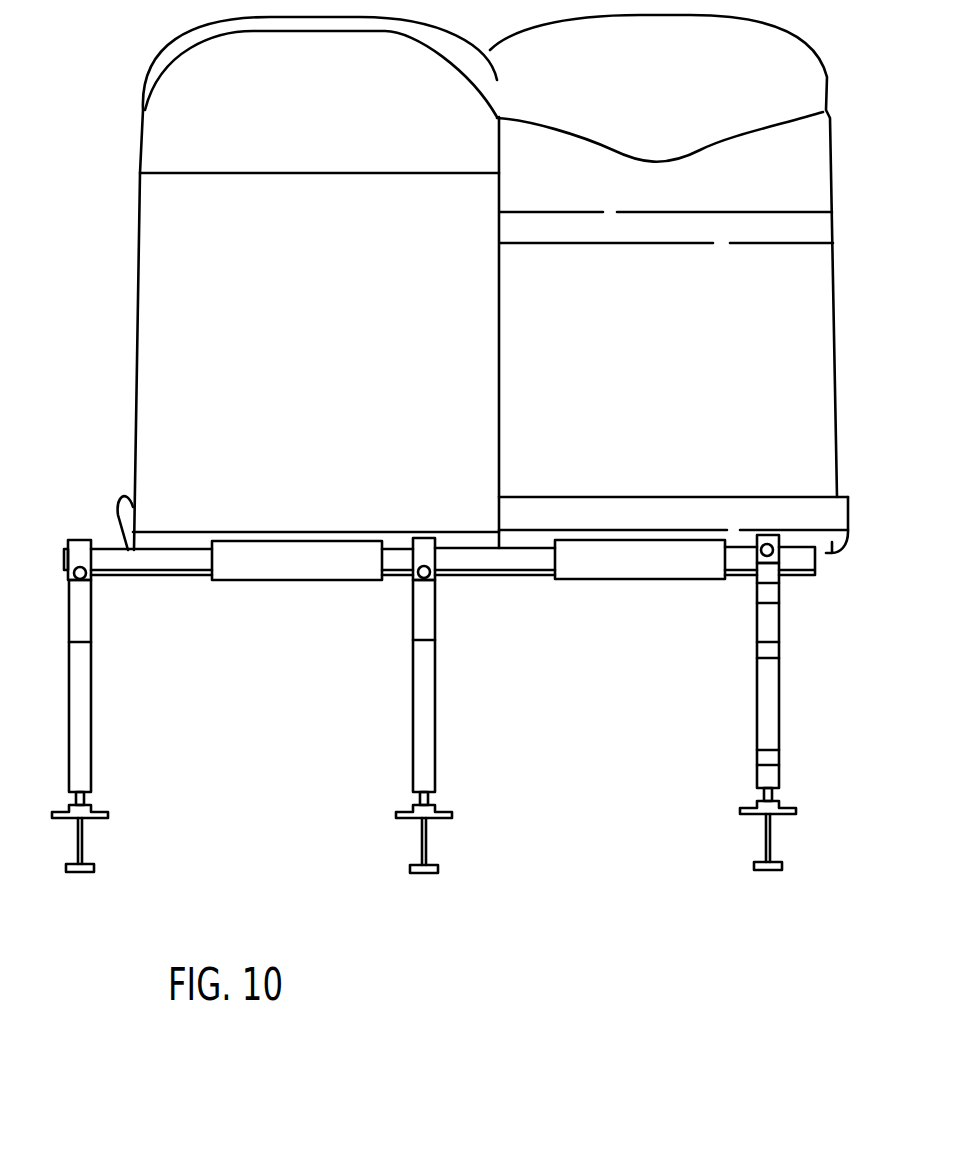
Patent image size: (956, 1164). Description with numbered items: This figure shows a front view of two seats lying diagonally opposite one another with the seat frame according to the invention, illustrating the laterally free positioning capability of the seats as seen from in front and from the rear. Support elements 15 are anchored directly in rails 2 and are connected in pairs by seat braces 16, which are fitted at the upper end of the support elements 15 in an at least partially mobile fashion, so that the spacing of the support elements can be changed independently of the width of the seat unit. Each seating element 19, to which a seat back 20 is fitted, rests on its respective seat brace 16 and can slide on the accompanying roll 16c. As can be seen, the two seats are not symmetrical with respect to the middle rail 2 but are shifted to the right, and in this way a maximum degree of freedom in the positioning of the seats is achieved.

The seat back 20 is at (168, 287).
The seating element 19 is at (827, 512).
The seat brace 16 is at (135, 560).
The roll 16c is at (618, 560).
The support element 15 is at (83, 731).
The rail 2 is at (82, 845).